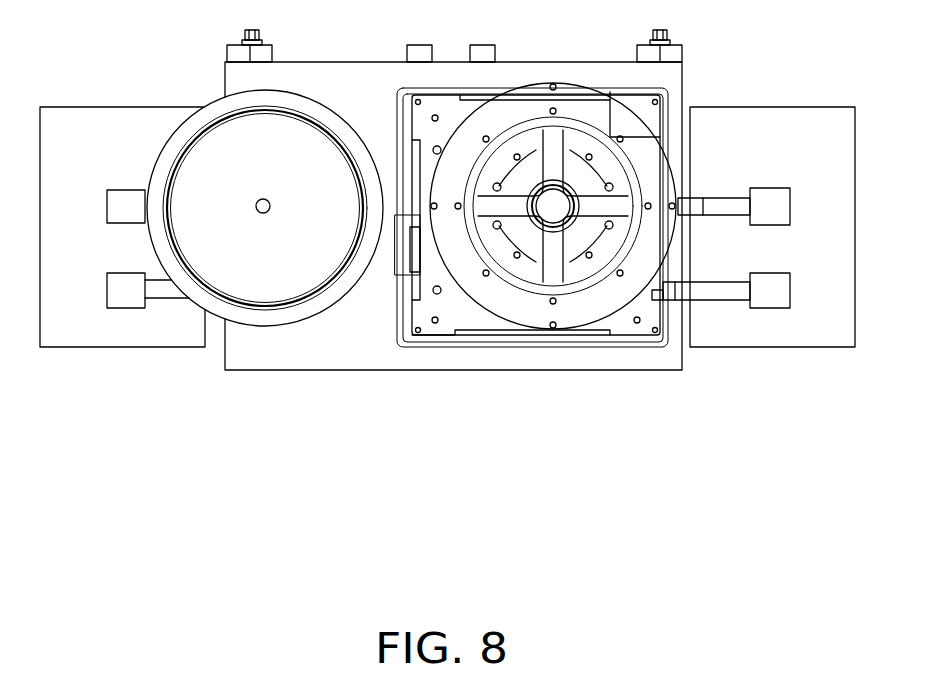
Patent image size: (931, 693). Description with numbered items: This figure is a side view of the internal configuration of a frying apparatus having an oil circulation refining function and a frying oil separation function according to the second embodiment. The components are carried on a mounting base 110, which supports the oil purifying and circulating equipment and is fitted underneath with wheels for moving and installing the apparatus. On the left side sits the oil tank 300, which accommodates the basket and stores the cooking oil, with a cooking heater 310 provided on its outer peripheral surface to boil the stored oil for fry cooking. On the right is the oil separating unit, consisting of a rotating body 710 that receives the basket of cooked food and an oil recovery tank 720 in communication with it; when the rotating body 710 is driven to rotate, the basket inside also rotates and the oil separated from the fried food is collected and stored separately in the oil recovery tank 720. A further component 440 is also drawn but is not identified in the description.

The mounting base 110 is at (368, 350).
The oil tank 300 is at (275, 252).
The cooking heater 310 is at (212, 303).
The first drive unit 440 is at (68, 347).
The rotating body 710 is at (592, 308).
The oil recovery tank 720 is at (772, 347).